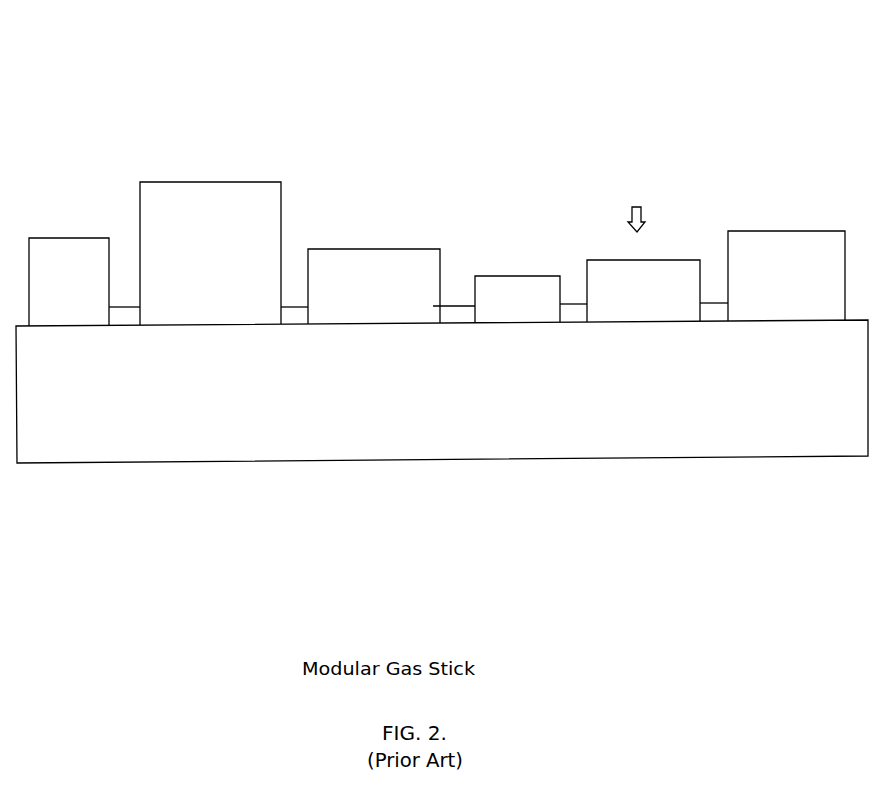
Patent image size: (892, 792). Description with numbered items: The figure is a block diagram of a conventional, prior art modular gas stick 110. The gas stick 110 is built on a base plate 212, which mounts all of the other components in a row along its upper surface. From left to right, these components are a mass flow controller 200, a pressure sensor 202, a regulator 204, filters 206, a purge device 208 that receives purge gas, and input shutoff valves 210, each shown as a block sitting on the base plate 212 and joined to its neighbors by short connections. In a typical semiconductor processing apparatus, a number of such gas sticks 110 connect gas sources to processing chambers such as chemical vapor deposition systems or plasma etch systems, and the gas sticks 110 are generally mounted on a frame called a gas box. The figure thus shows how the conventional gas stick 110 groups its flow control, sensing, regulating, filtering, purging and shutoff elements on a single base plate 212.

The gas stick 110 is at (612, 73).
The mass flow controller 200 is at (42, 238).
The pressure sensor 202 is at (228, 187).
The regulator 204 is at (350, 249).
The filters 206 is at (517, 282).
The purge device 208 is at (645, 260).
The input shutoff valves 210 is at (780, 231).
The base plate 212 is at (460, 398).